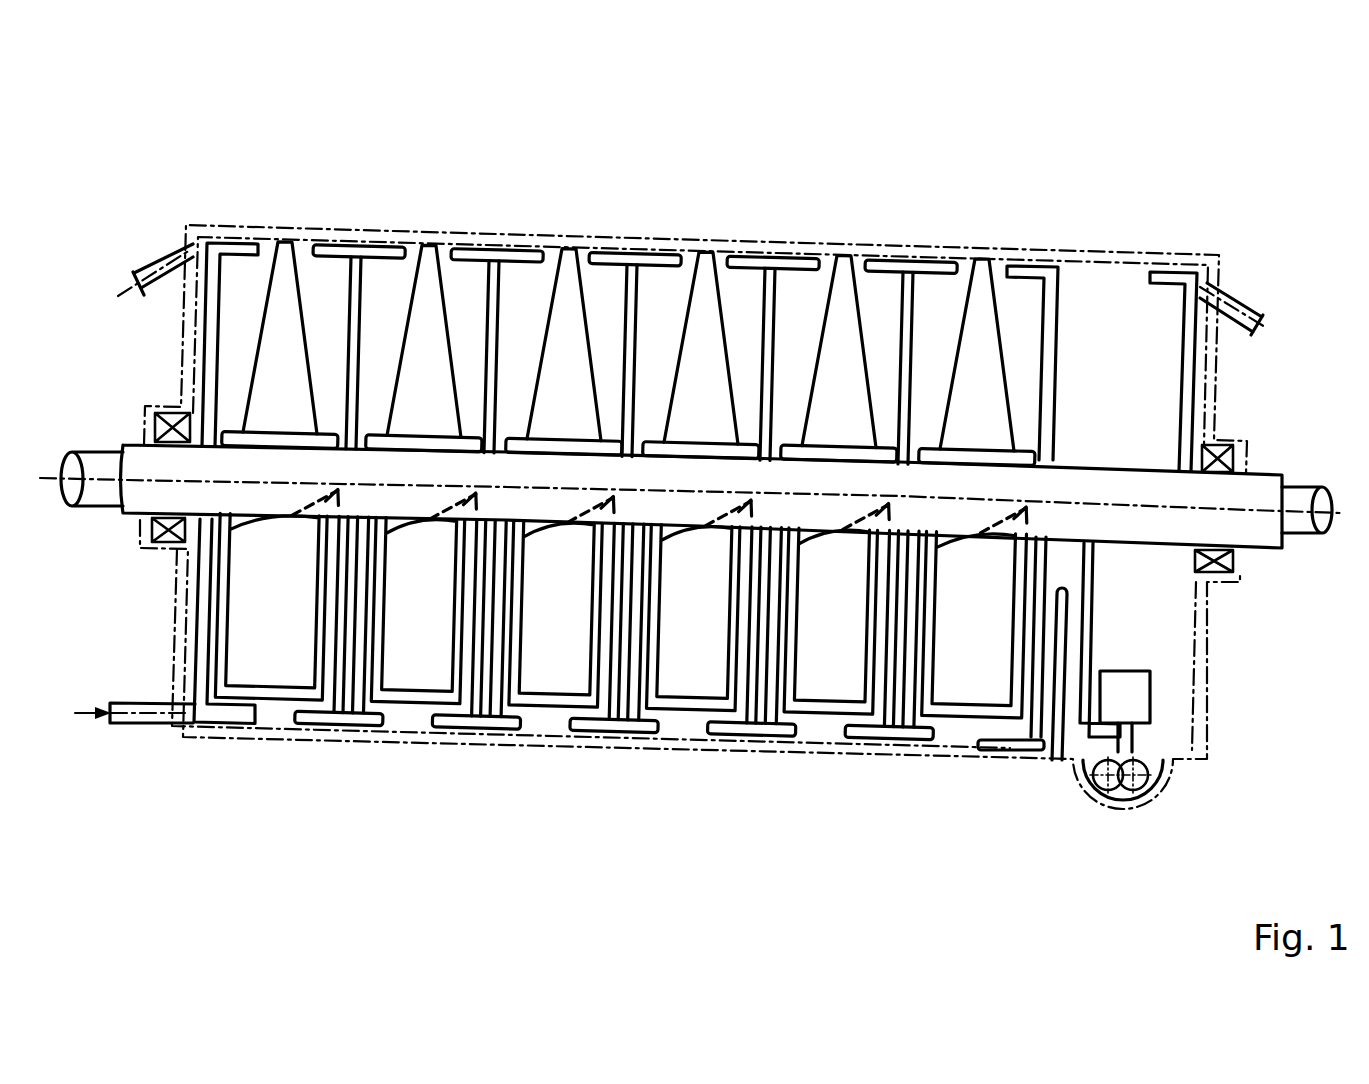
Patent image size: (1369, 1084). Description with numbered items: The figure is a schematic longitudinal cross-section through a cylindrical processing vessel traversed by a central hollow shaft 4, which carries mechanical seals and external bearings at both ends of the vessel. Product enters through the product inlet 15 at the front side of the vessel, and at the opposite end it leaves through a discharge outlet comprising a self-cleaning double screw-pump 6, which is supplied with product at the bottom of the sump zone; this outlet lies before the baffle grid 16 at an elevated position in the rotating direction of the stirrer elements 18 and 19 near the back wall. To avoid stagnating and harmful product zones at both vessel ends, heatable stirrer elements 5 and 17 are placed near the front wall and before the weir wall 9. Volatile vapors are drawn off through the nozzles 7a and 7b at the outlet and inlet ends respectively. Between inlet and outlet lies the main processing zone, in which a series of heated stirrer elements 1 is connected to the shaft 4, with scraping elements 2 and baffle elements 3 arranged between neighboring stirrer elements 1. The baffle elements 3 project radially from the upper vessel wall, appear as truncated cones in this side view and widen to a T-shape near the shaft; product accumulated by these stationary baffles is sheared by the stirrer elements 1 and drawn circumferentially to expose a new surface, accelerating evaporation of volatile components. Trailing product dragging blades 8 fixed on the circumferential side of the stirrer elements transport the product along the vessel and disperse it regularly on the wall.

The heated stirrer element 1 is at (501, 300).
The scraping element 2 is at (460, 644).
The baffle element 3 is at (428, 258).
The central hollow shaft 4 is at (145, 460).
The heatable stirrer element 5 is at (236, 250).
The self-cleaning double screw-pump 6 is at (1127, 788).
The nozzle 7a is at (1251, 308).
The nozzle 7b is at (145, 268).
The trailing product dragging blade 8 is at (484, 256).
The weir wall 9 is at (1057, 740).
The product inlet 15 is at (123, 730).
The baffle grid 16 is at (1155, 692).
The heatable stirrer element 17 is at (1037, 264).
The stirrer element 18 is at (1081, 633).
The stirrer element 19 is at (1183, 272).